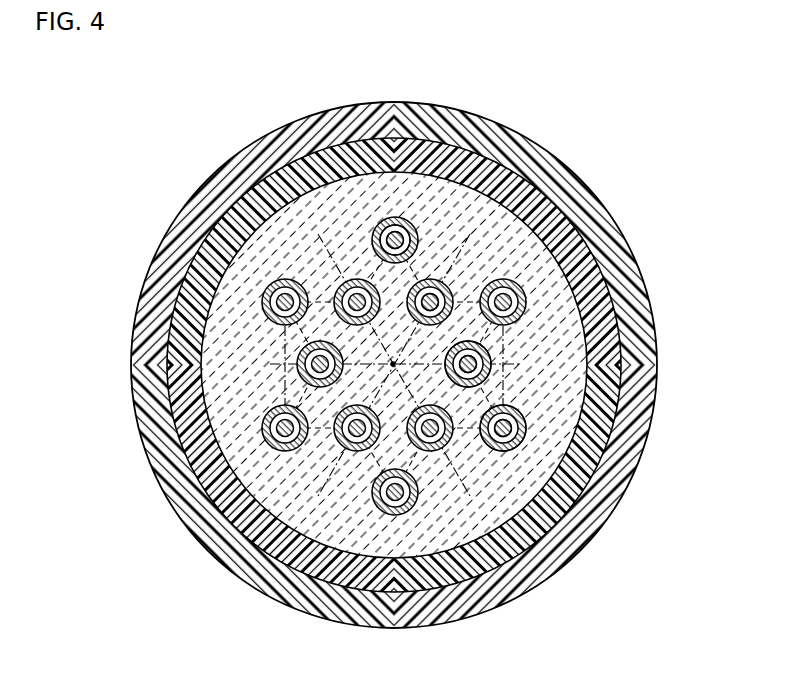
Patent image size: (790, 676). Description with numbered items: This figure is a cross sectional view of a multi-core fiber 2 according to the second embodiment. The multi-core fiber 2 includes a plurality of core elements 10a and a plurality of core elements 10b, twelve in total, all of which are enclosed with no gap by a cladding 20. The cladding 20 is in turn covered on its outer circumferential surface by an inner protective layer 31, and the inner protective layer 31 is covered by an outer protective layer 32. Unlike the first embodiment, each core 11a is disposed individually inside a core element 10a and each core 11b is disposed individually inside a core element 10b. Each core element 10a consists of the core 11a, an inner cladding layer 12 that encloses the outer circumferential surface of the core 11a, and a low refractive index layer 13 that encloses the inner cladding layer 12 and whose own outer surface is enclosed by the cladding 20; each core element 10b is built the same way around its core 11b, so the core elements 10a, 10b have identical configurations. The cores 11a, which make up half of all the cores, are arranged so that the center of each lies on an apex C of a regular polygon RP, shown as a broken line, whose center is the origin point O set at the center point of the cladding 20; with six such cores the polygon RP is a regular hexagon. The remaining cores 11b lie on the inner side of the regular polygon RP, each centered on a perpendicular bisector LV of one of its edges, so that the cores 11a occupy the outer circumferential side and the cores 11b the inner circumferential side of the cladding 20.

The multi-core fiber 2 is at (682, 96).
The core element 10a is at (395, 213).
The core element 10b is at (353, 275).
The core 11a is at (440, 279).
The core 11b is at (521, 415).
The inner cladding layer 12 is at (399, 226).
The low refractive index layer 13 is at (388, 233).
The cladding 20 is at (520, 258).
The inner protective layer 31 is at (633, 368).
The outer protective layer 32 is at (606, 350).
The apex C is at (528, 436).
The origin point O is at (396, 362).
The perpendicular bisector LV is at (405, 292).
The regular polygon RP is at (300, 175).